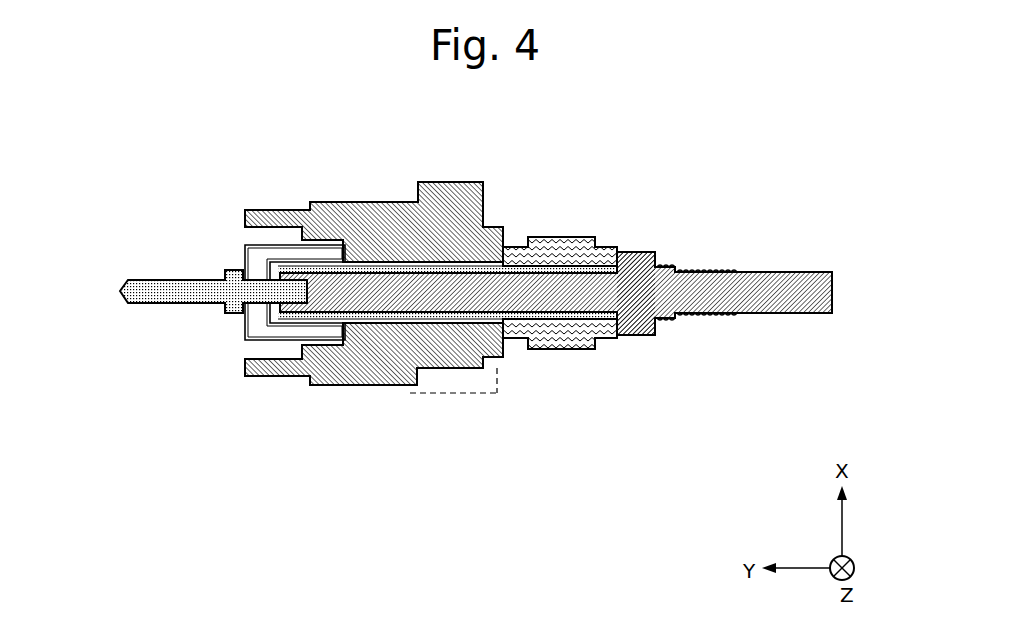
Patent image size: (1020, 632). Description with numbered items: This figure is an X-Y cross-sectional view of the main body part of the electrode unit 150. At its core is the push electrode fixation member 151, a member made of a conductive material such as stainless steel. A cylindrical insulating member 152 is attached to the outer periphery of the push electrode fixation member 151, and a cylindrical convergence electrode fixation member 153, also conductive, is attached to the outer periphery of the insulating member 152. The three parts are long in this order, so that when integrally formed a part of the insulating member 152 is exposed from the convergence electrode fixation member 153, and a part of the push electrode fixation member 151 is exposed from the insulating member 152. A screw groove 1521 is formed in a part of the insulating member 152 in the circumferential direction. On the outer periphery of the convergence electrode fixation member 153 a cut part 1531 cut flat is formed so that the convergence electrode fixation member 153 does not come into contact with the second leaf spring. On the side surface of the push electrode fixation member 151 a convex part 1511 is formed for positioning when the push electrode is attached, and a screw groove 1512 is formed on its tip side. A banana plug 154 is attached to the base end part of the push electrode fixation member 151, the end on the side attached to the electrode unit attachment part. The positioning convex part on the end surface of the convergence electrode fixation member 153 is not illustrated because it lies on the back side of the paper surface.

The electrode unit 150 is at (745, 165).
The push electrode fixation member 151 is at (755, 313).
The convex part 1511 is at (668, 268).
The screw groove 1512 is at (712, 315).
The insulating member 152 is at (602, 252).
The screw groove 1521 is at (560, 353).
The convergence electrode fixation member 153 is at (387, 200).
The cut part 1531 is at (452, 386).
The banana plug 154 is at (192, 277).